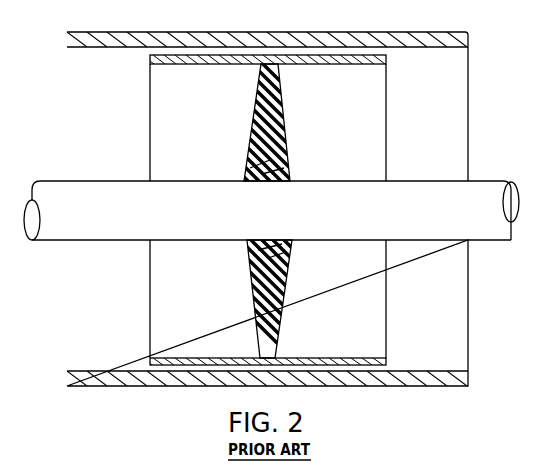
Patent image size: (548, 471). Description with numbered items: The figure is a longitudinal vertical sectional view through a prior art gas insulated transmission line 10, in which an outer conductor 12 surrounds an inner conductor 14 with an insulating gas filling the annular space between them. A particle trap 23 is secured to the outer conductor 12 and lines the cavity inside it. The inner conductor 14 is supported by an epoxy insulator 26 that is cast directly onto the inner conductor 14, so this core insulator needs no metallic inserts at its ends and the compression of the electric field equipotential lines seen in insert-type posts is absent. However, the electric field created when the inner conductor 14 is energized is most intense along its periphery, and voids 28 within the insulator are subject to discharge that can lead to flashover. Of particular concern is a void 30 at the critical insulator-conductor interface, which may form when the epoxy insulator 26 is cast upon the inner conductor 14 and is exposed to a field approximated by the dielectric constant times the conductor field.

The gas insulated transmission line 10 is at (414, 22).
The outer conductor 12 is at (228, 32).
The inner conductor 14 is at (487, 181).
The particle trap 23 is at (152, 58).
The epoxy insulator 26 is at (280, 113).
The voids 28 is at (268, 157).
The void at insulator conductor interface 30 is at (250, 244).